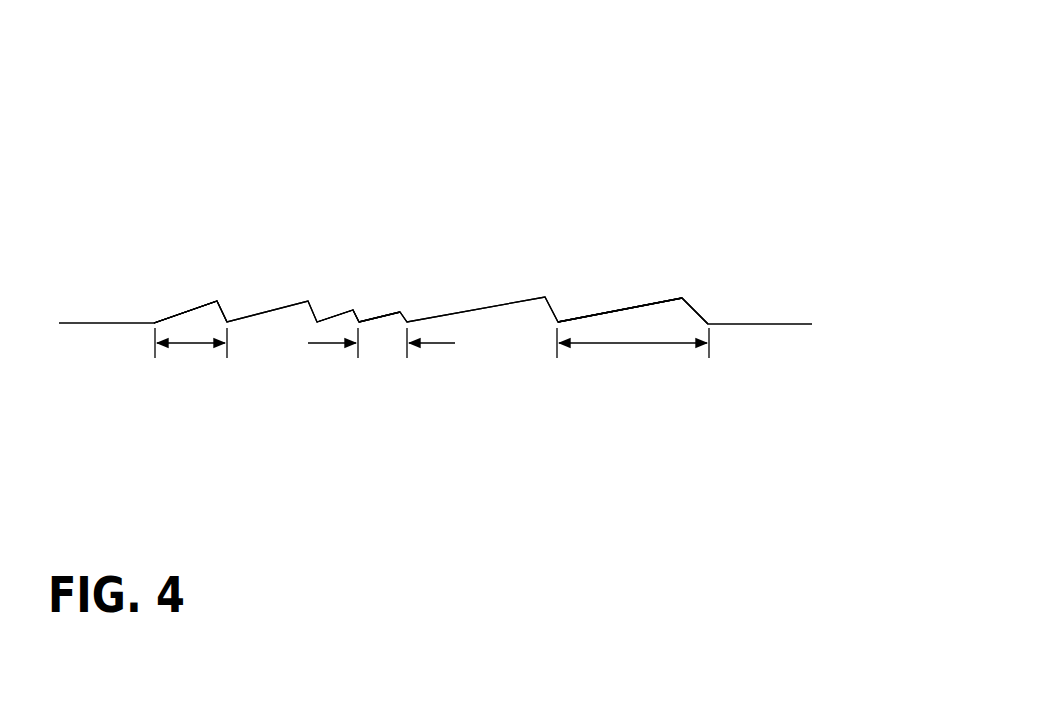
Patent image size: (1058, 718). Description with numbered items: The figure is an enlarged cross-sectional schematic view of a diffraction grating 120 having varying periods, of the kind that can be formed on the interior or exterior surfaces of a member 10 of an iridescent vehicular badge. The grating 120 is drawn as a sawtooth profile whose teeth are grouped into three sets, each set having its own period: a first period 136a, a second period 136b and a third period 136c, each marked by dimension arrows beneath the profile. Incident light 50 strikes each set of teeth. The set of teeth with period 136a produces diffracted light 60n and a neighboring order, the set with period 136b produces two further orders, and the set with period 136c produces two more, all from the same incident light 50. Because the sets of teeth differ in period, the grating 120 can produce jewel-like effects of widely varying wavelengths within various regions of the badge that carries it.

The member 10 is at (805, 201).
The diffraction grating 120 is at (697, 151).
The incident light 50 is at (165, 309).
The diffracted light 60n is at (175, 305).
The period 136a is at (189, 345).
The period 136b is at (328, 345).
The period 136c is at (615, 345).